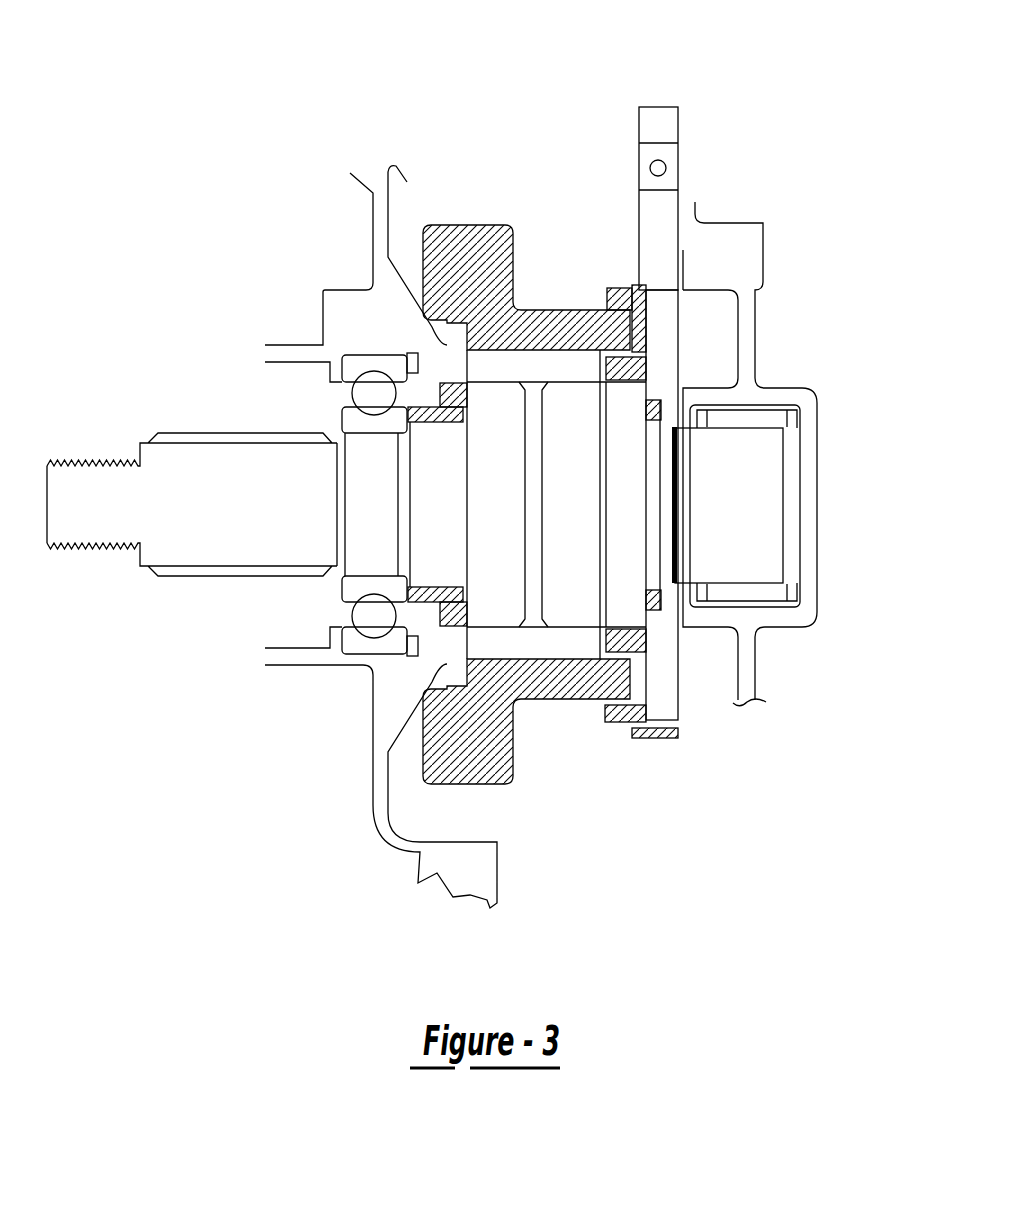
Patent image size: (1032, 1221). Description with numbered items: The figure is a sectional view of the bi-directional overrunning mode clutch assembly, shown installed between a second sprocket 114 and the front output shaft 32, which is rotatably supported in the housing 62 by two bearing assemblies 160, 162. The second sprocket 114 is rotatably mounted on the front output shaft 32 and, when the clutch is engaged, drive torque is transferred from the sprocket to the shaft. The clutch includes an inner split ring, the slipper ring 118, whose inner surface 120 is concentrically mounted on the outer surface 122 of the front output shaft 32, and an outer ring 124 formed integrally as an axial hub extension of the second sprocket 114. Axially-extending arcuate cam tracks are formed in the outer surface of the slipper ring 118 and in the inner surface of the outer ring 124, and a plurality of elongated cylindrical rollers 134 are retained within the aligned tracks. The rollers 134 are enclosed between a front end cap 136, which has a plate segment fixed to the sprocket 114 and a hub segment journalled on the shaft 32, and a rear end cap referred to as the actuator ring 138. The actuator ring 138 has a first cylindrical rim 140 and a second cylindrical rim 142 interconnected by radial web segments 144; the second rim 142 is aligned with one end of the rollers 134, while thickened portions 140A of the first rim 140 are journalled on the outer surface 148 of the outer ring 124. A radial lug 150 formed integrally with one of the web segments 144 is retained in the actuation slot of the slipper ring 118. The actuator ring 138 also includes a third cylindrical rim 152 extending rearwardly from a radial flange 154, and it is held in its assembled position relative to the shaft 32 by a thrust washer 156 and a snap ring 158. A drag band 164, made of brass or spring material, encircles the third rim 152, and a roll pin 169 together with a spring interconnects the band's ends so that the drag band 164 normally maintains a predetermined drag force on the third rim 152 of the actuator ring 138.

The front output shaft 32 is at (483, 397).
The housing 62 is at (383, 797).
The second sprocket 114 is at (485, 218).
The slipper ring 118 is at (350, 390).
The inner surface 120 is at (495, 395).
The outer surface 122 is at (573, 392).
The outer ring 124 is at (555, 332).
The rollers 134 is at (468, 361).
The front end cap 136 is at (447, 608).
The actuator ring 138 is at (619, 278).
The first cylindrical rim 140 is at (618, 730).
The thickened portions 140A is at (602, 294).
The second cylindrical rim 142 is at (625, 655).
The radial web segments 144 is at (642, 335).
The outer surface 148 is at (562, 702).
The radial lug 150 is at (617, 397).
The third cylindrical rim 152 is at (658, 283).
The radial flange 154 is at (635, 742).
The thrust washer 156 is at (670, 637).
The snap ring 158 is at (670, 415).
The bearing assembly 160 is at (764, 403).
The bearing assembly 162 is at (350, 620).
The drag band 164 is at (690, 254).
The roll pin 169 is at (657, 160).